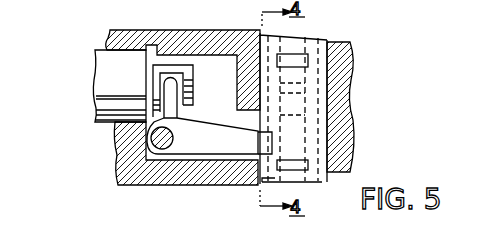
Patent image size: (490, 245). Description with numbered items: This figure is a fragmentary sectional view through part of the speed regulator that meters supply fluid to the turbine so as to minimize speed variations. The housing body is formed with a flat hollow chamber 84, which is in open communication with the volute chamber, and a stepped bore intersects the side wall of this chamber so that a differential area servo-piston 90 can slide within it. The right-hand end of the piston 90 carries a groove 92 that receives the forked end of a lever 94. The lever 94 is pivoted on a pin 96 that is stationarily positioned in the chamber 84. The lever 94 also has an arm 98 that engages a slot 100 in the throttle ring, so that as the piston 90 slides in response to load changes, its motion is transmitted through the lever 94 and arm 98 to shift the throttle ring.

The differential area servo-piston 90 is at (103, 60).
The groove 92 is at (183, 74).
The flat hollow chamber 84 is at (190, 95).
The lever 94 is at (172, 117).
The pin 96 is at (162, 149).
The arm 98 is at (217, 146).
The slot 100 is at (249, 183).